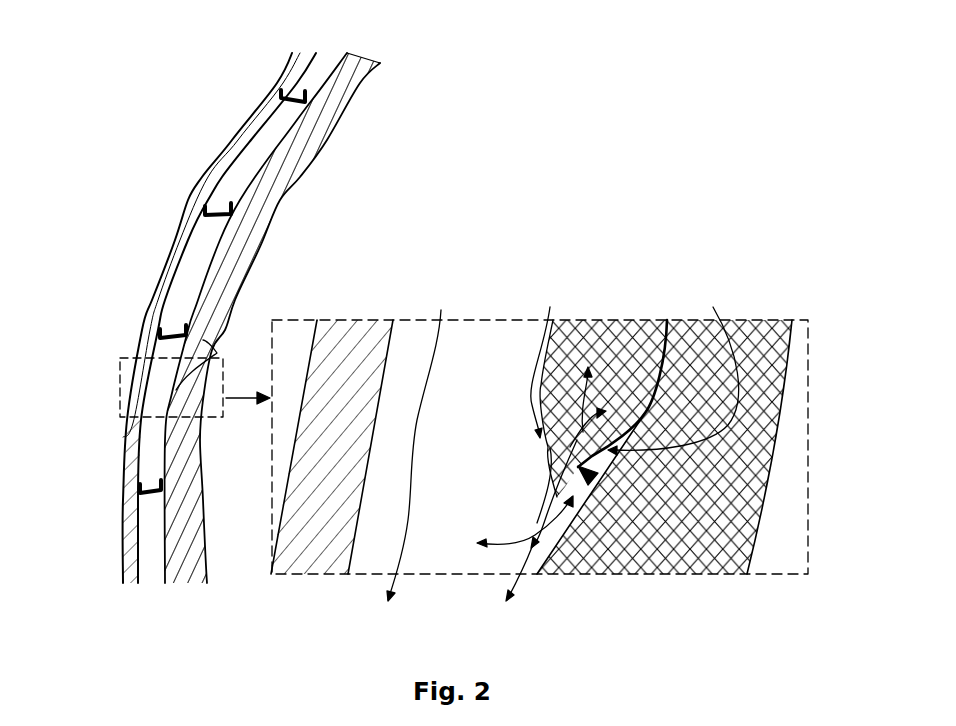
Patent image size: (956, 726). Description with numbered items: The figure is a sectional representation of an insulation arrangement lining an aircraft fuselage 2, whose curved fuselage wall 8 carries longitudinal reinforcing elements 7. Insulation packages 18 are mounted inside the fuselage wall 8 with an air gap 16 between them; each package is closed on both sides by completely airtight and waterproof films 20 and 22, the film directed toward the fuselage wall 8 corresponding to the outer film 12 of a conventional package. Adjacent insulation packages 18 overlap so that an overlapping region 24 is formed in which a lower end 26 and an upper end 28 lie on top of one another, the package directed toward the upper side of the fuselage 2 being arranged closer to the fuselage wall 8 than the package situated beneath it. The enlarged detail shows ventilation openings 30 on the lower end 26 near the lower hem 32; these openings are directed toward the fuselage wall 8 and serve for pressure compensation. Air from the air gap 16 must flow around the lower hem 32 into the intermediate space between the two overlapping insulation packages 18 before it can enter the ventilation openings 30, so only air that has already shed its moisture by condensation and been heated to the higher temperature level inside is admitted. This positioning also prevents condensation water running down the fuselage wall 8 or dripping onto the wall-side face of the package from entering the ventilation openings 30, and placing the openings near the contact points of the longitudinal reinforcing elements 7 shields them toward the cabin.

The aircraft fuselage 2 is at (186, 147).
The longitudinal reinforcing elements 7 is at (213, 217).
The fuselage wall 8 is at (130, 567).
The outer film 12 is at (280, 127).
The air gap 16 is at (192, 275).
The insulation packages 18 is at (273, 193).
The film 20 is at (547, 337).
The film 22 is at (264, 254).
The overlapping region 24 is at (125, 345).
The lower end 26 is at (183, 372).
The upper end 28 is at (200, 395).
The ventilation openings 30 is at (595, 478).
The lower hem 32 is at (553, 500).